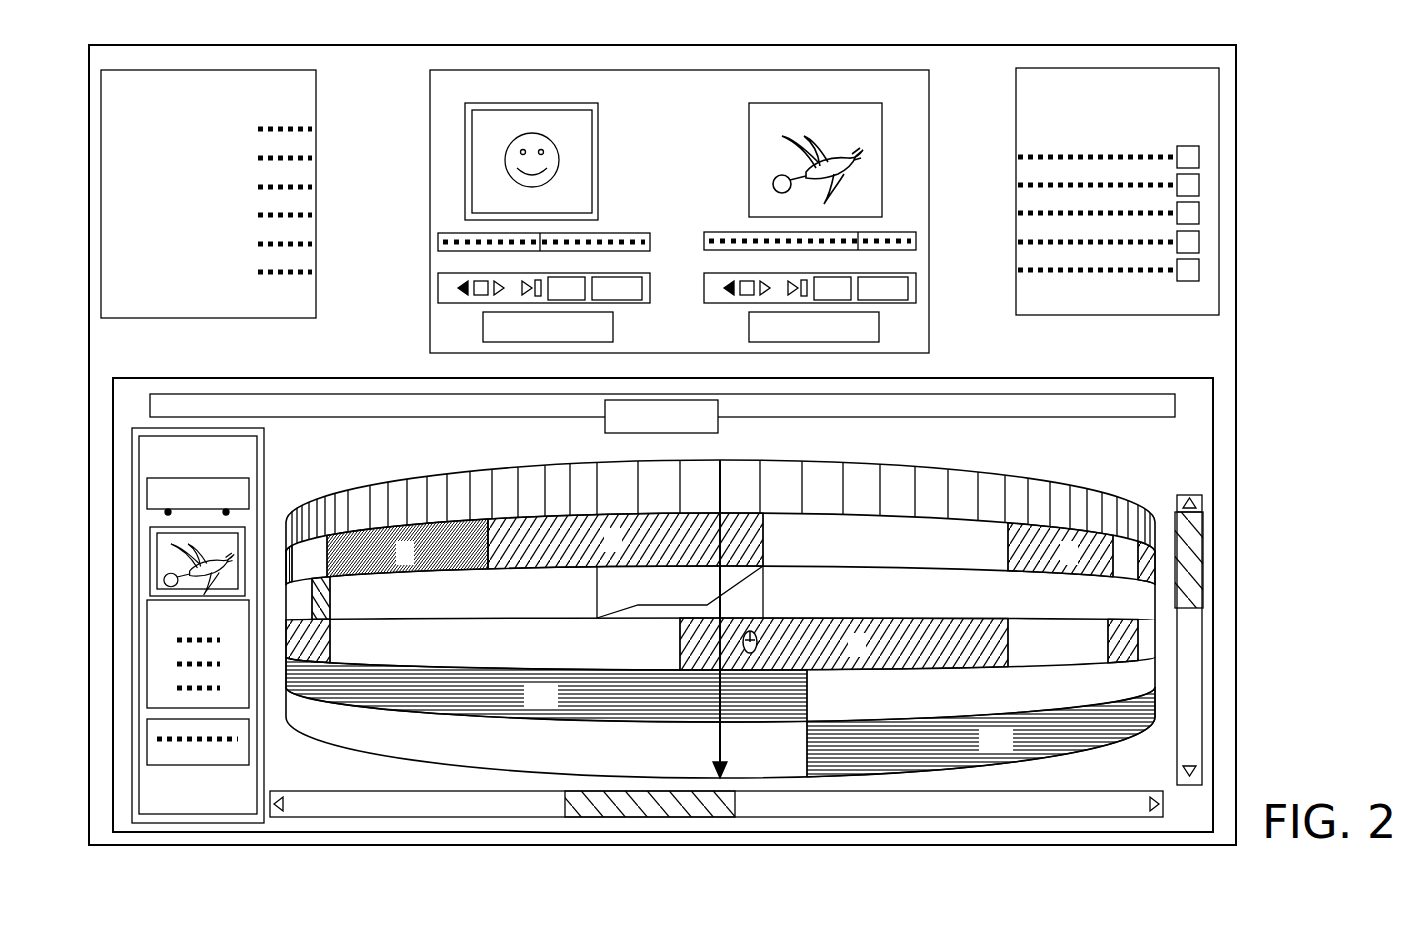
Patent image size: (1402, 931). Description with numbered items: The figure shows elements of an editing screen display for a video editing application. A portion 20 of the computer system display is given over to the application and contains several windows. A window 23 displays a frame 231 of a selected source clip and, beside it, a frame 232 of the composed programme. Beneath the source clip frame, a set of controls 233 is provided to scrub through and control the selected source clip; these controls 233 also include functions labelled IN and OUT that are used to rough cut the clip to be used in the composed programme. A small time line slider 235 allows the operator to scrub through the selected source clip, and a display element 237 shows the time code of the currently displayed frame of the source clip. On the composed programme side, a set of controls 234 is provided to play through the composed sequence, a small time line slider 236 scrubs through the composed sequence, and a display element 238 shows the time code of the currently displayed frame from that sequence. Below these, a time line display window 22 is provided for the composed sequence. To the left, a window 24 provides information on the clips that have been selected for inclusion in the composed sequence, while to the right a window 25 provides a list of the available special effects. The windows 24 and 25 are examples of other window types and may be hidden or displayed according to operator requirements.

The portion of the computer system display 20 is at (1075, 50).
The time line display window 22 is at (1184, 378).
The window 23 is at (912, 87).
The window 24 is at (300, 92).
The window 25 is at (1018, 127).
The frame of a selected source clip 231 is at (583, 130).
The frame of the composed programme 232 is at (754, 130).
The set of controls 233 is at (440, 287).
The set of controls 234 is at (915, 287).
The small time line slider 235 is at (440, 239).
The small time line slider 236 is at (915, 238).
The display element 237 is at (605, 322).
The display element 238 is at (757, 322).